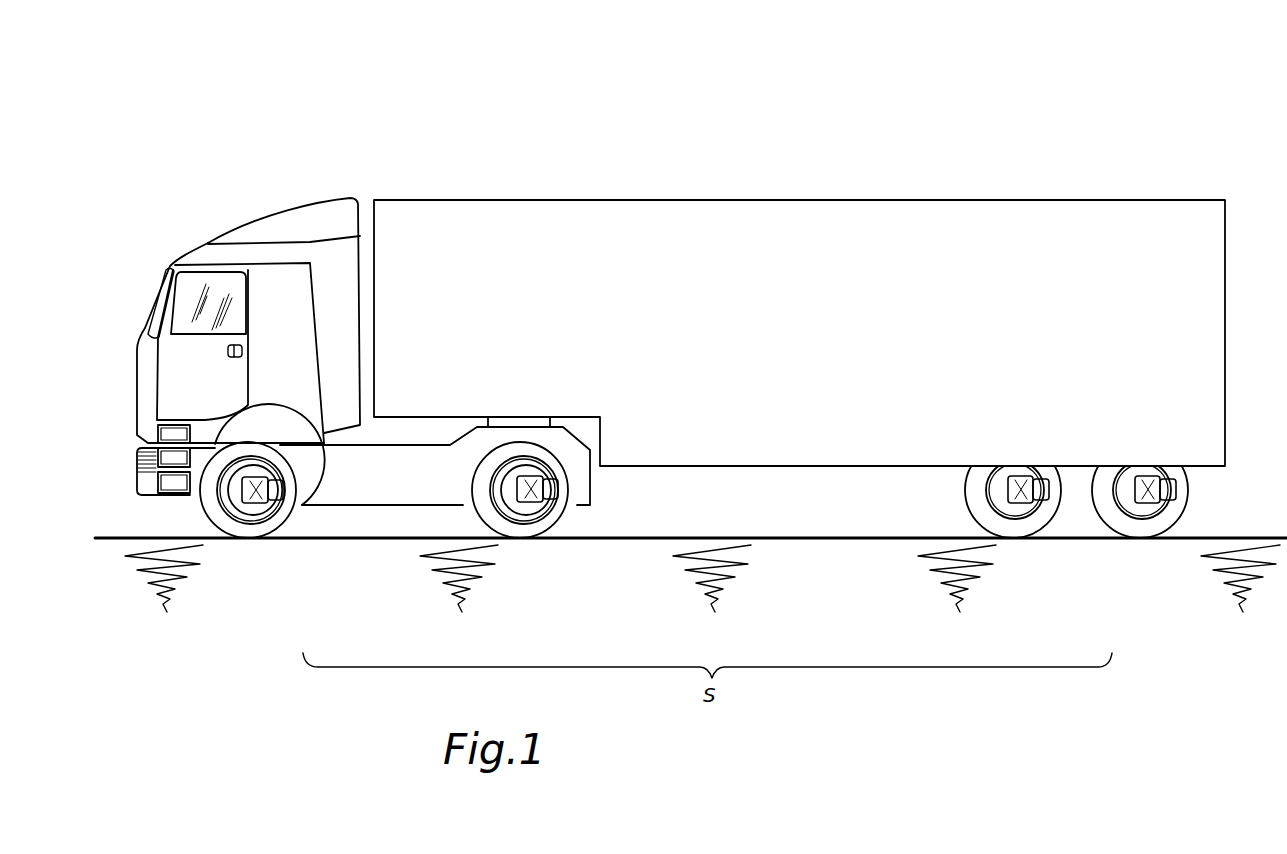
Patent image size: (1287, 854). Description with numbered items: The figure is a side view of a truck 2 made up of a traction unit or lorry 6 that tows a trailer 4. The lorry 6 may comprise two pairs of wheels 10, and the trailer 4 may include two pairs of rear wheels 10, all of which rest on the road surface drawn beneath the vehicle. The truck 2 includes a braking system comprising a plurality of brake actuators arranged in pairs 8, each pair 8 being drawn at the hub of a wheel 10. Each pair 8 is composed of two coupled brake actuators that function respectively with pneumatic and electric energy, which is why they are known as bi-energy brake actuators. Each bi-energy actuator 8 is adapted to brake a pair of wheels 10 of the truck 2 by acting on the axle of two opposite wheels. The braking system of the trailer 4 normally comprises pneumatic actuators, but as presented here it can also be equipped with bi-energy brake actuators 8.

The truck 2 is at (691, 330).
The trailer 4 is at (548, 235).
The traction unit or lorry 6 is at (293, 223).
The pair of brake actuators 8 is at (283, 504).
The wheels 10 is at (210, 507).